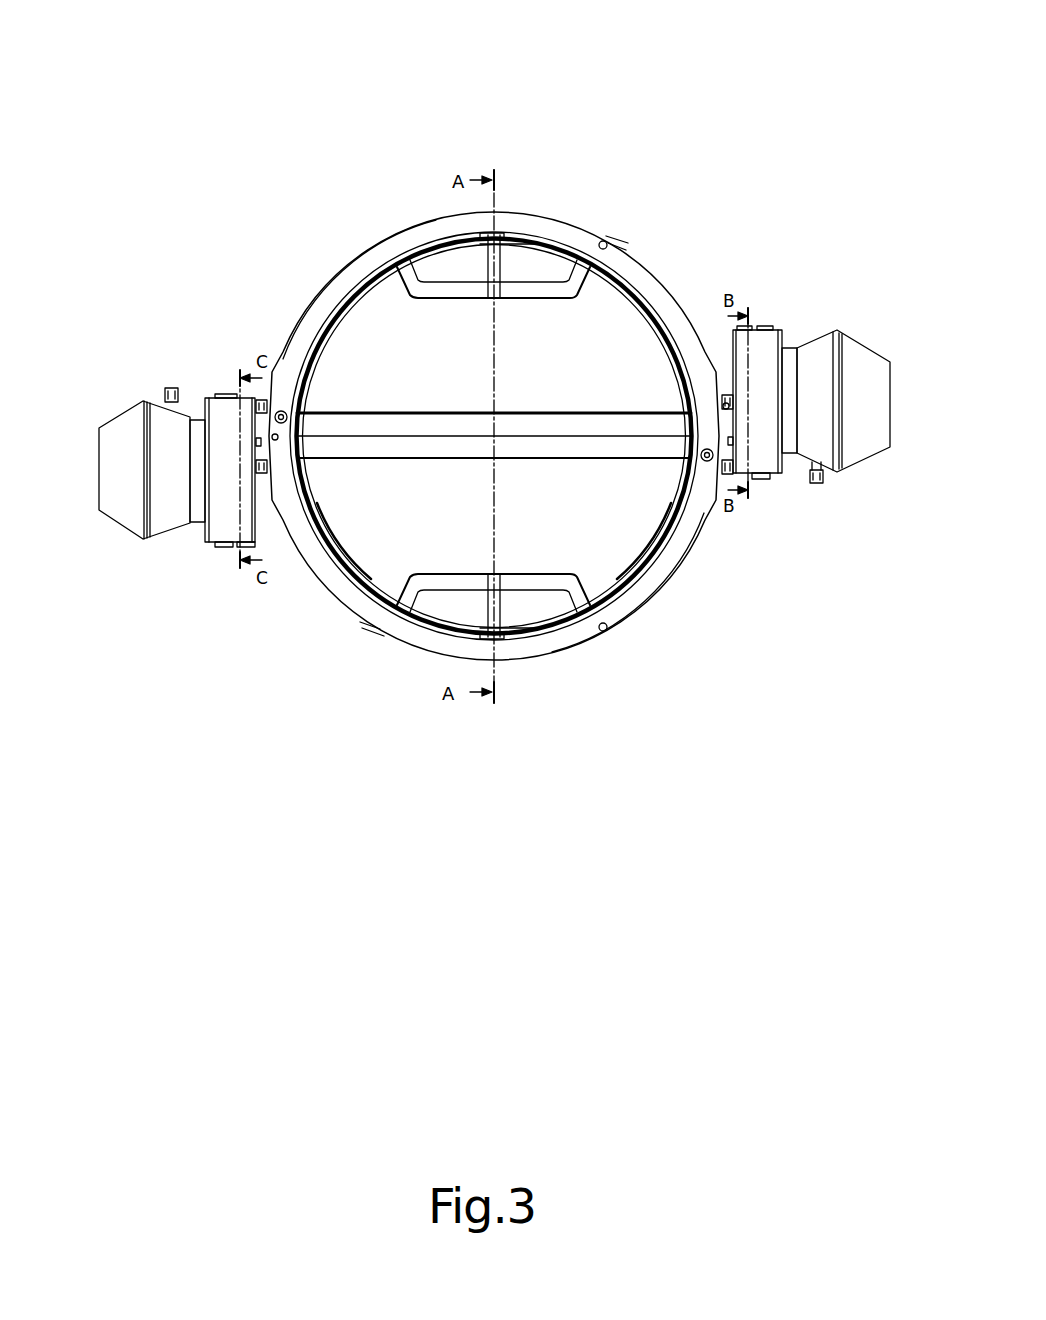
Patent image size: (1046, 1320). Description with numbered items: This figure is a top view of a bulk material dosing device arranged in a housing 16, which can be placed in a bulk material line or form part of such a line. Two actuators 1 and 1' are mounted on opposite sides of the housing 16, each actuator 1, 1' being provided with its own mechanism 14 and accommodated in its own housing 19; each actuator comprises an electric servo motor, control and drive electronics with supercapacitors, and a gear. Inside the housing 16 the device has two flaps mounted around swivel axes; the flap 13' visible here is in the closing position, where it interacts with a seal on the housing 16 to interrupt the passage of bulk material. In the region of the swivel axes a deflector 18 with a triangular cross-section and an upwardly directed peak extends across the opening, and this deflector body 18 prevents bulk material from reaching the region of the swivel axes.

The actuator 1 is at (170, 296).
The actuator 1' is at (829, 241).
The mechanism 14 is at (243, 346).
The housing 16 is at (630, 602).
The deflector 18 is at (585, 450).
The housing 19 is at (140, 598).
The flap 13' is at (494, 436).